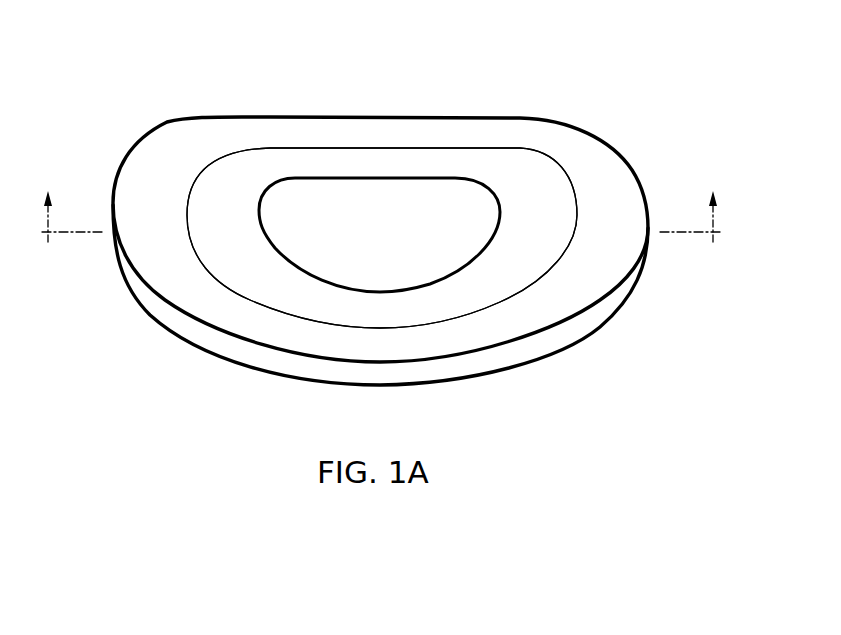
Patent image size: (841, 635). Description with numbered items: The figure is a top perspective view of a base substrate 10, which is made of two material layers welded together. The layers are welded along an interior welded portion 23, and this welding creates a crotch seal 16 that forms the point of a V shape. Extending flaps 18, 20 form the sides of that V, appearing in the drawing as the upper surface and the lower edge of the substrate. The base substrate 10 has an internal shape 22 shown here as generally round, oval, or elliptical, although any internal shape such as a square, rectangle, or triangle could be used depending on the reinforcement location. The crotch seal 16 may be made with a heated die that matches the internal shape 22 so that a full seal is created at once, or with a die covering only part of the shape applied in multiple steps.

The base substrate 10 is at (581, 76).
The crotch seal 16 is at (185, 195).
The extending flap 18 is at (620, 172).
The extending flap 20 is at (617, 306).
The internal shape 22 is at (369, 228).
The interior welded portion 23 is at (232, 183).